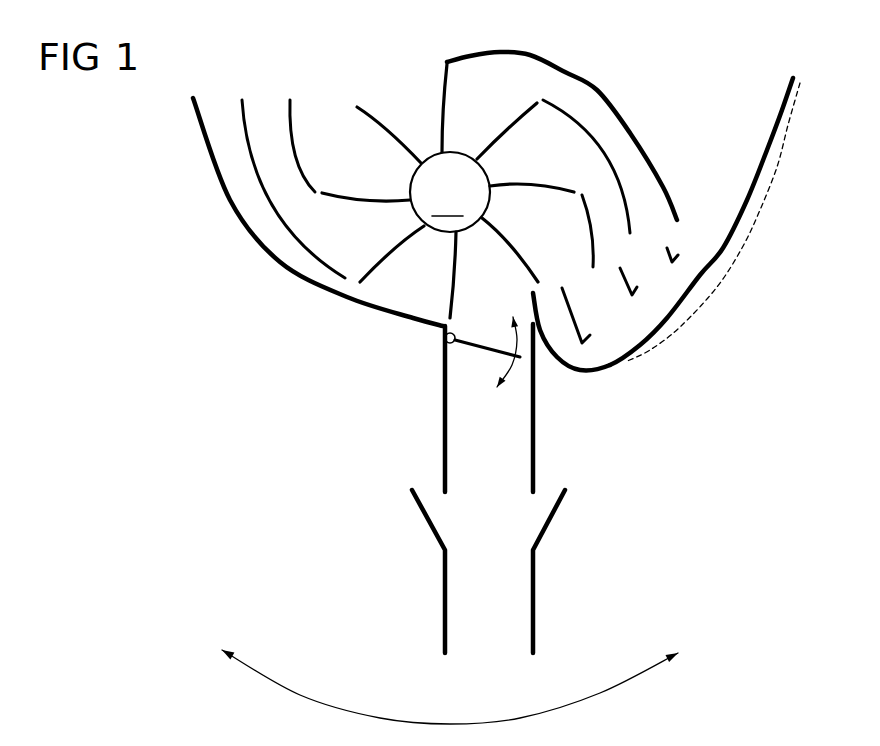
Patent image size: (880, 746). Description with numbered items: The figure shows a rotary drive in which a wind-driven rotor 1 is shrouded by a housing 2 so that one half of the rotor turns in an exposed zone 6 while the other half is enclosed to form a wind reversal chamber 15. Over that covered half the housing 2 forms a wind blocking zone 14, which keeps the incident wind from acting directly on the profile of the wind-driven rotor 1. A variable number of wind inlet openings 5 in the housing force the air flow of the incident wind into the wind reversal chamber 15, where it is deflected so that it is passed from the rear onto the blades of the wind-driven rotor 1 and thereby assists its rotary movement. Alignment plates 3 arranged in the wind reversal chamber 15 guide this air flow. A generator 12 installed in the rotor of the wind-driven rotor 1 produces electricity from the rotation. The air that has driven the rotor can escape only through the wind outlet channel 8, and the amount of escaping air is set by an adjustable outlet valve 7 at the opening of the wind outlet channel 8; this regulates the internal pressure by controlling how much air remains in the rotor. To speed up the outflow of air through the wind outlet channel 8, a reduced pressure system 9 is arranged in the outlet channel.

The wind-driven rotor 1 is at (420, 153).
The housing 2 is at (507, 51).
The alignment plates 3 is at (290, 103).
The wind inlet openings 5 is at (263, 103).
The exposed zone 6 is at (418, 80).
The outlet valve 7 is at (483, 349).
The wind outlet channel 8 is at (507, 428).
The reduced pressure system 9 is at (518, 522).
The generator 12 is at (450, 192).
The wind blocking zone 14 is at (594, 87).
The wind reversal chamber 15 is at (587, 345).